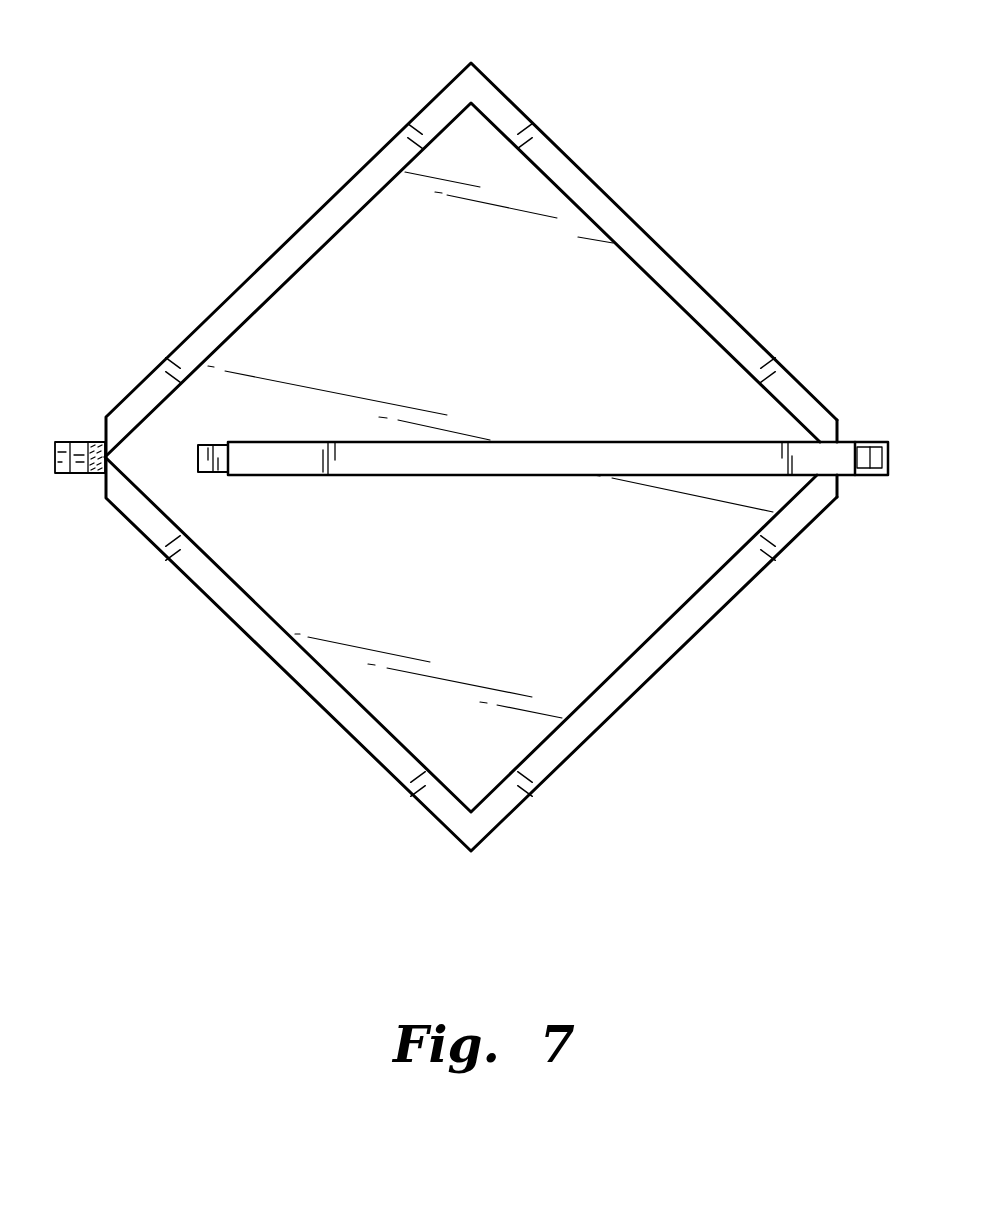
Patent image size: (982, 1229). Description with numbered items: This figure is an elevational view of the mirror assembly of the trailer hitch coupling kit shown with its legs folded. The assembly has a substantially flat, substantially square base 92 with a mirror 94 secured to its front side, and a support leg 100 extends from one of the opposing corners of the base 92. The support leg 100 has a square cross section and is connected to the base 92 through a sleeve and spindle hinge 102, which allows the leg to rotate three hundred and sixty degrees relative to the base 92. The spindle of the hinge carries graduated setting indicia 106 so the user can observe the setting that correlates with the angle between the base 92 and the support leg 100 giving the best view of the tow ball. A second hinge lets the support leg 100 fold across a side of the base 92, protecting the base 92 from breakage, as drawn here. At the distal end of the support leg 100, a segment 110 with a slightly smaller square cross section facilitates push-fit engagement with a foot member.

The base 92 is at (507, 117).
The mirror 94 is at (678, 347).
The support leg 100 is at (743, 467).
The sleeve and spindle hinge 102 is at (90, 443).
The graduated setting indicia 106 is at (97, 477).
The segment of the support leg 110 is at (213, 473).